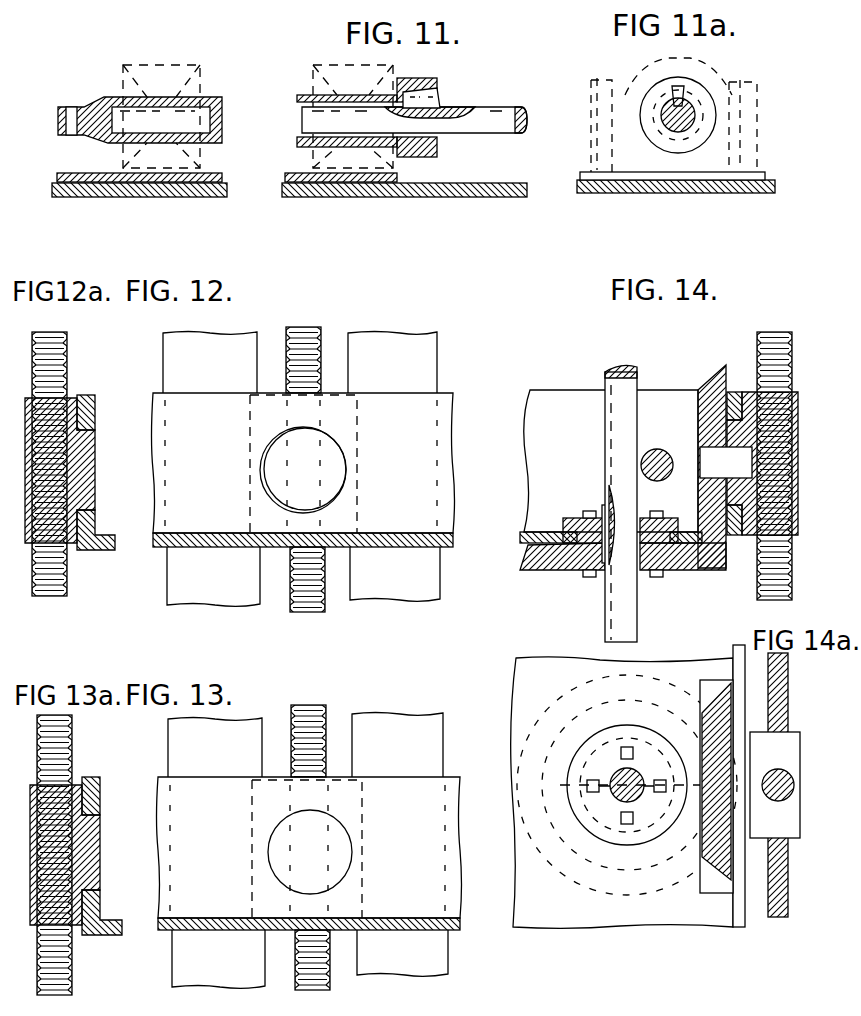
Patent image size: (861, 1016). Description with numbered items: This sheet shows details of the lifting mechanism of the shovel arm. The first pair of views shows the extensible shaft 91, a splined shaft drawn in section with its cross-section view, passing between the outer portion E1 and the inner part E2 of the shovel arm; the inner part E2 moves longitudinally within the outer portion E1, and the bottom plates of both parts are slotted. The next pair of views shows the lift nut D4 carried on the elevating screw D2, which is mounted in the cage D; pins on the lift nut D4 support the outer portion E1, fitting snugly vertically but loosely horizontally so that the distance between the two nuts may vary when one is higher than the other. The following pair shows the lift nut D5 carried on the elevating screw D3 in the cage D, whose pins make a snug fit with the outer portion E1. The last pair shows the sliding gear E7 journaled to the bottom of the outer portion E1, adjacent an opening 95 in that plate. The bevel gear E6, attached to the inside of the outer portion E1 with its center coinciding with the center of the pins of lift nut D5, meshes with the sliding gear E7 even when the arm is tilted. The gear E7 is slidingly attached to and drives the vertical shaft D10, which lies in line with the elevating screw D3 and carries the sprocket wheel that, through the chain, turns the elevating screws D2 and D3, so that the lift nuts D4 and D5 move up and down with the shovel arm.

In FIG. 11, the shaft / rod 91 is at (300, 115).
In FIG. 11A, the shaft / rod 91 is at (647, 114).
In FIG. 11, the outer portion of shovel arm E1 is at (577, 187).
In FIG. 12A, the outer portion of shovel arm E1 is at (153, 409).
In FIG. 12, the outer portion of shovel arm E1 is at (153, 409).
In FIG. 13A, the outer portion of shovel arm E1 is at (160, 798).
In FIG. 13, the outer portion of shovel arm E1 is at (160, 798).
In FIG. 14, the outer portion of shovel arm E1 is at (572, 390).
In FIG. 14A, the outer portion of shovel arm E1 is at (520, 548).
In FIG. 11, the inner part of shovel arm E2 is at (400, 176).
In FIG. 12, the cage D is at (252, 358).
In FIG. 13, the cage D is at (256, 747).
In FIG. 14A, the cage D is at (788, 681).
In FIG. 12A, the elevating screw D2 is at (63, 377).
In FIG. 12, the elevating screw D2 is at (308, 330).
In FIG. 13A, the elevating screw D3 is at (70, 746).
In FIG. 13, the elevating screw D3 is at (315, 712).
In FIG. 14, the elevating screw D3 is at (784, 356).
In FIG. 14A, the elevating screw D3 is at (792, 779).
In FIG. 12, the lift nut D4 is at (275, 457).
In FIG. 13, the lift nut D5 is at (280, 847).
In FIG. 14, the lift nut D5 is at (800, 410).
In FIG. 14A, the lift nut D5 is at (800, 792).
In FIG. 14, the vertical shaft D10 is at (613, 366).
In FIG. 14A, the vertical shaft D10 is at (632, 770).
In FIG. 14, the bevel gear E6 is at (714, 380).
In FIG. 14A, the bevel gear E6 is at (712, 690).
In FIG. 14A, the sliding gear E7 is at (590, 740).
In FIG. 14, the hole 95 is at (666, 452).